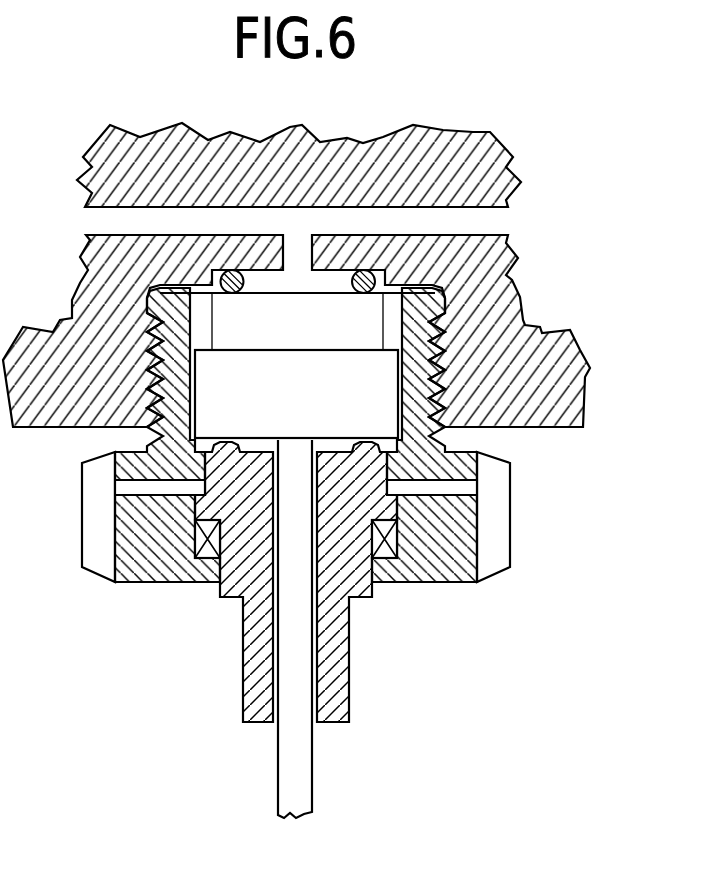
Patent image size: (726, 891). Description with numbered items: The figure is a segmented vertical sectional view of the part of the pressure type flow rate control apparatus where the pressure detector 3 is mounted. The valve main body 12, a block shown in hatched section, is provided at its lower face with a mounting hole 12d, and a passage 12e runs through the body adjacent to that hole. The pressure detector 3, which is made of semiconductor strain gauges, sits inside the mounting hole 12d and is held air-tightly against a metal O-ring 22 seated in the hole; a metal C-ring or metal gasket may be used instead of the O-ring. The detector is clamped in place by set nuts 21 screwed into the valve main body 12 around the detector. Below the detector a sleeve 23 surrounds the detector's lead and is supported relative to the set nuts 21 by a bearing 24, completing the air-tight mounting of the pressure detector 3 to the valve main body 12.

The valve main body 12 is at (567, 378).
The passage slot 12e is at (491, 215).
The mounting hole 12d is at (282, 282).
The metal O-ring 22 is at (367, 272).
The pressure detector 3 is at (262, 305).
The set nut 21 is at (468, 543).
The sleeve 23 is at (350, 570).
The bearing 24 is at (395, 555).